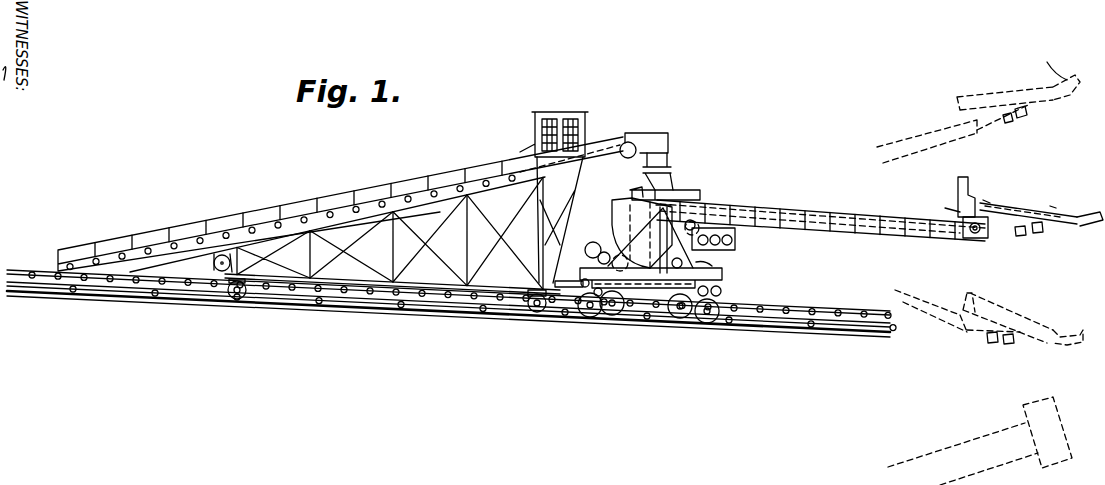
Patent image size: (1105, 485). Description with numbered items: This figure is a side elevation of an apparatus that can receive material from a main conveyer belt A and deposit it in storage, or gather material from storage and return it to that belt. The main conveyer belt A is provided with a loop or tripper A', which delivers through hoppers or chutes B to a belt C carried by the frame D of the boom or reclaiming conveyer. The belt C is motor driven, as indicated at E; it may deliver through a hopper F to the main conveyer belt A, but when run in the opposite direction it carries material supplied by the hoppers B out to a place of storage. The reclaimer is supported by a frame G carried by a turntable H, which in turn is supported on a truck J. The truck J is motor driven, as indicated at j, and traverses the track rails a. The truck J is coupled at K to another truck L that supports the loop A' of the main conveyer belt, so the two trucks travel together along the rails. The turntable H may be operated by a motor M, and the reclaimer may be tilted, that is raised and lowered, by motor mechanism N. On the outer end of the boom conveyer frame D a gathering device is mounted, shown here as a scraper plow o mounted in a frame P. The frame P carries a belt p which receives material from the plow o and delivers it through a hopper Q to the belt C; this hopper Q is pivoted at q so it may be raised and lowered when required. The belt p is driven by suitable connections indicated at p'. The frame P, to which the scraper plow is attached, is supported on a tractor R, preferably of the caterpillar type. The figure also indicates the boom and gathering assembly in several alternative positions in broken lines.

The main conveyer belt A is at (424, 239).
The loop or tripper A' is at (636, 128).
The hoppers or chutes B is at (665, 160).
The belt C is at (770, 214).
The frame of the boom or reclaiming conveyer D is at (912, 300).
The motor drive for belt C E is at (735, 247).
The hopper F is at (645, 305).
The frame G is at (628, 224).
The turntable H is at (665, 305).
The truck J is at (612, 312).
The coupling K is at (569, 280).
The truck L is at (345, 244).
The motor M is at (700, 263).
The motor mechanism N is at (592, 248).
The frame P is at (978, 100).
The hopper Q is at (968, 192).
The tractor R is at (1015, 120).
The track rails a is at (228, 297).
The motor drive of truck j is at (583, 298).
The scraper plow o is at (1082, 212).
The belt p is at (1051, 193).
The driving connections p' is at (927, 196).
The pivot q is at (985, 202).